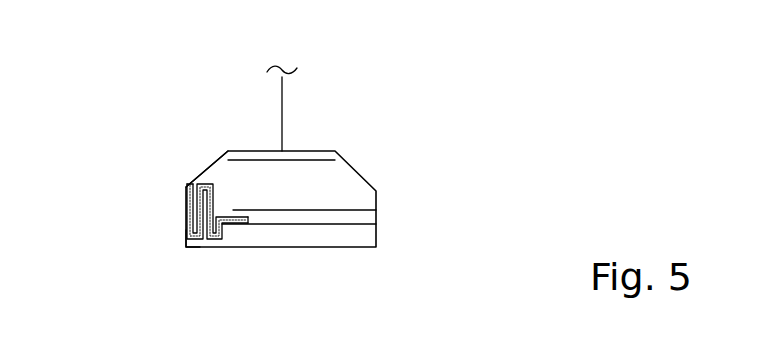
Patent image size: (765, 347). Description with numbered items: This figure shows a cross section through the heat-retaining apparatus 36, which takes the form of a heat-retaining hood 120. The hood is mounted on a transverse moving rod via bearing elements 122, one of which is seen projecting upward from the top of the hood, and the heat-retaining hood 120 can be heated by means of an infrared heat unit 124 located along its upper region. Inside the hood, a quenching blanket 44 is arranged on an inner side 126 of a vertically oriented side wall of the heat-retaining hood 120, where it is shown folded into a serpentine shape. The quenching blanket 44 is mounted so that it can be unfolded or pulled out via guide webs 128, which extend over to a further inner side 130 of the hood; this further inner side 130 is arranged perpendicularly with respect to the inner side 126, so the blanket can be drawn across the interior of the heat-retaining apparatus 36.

The heat-retaining apparatus 36 is at (182, 172).
The heat-retaining hood 120 is at (213, 158).
The bearing elements 122 is at (283, 126).
The infrared heat unit 124 is at (303, 159).
The inner side 126 is at (187, 207).
The quenching blanket 44 is at (187, 233).
The guide webs 128 is at (346, 222).
The further inner side 130 is at (362, 240).